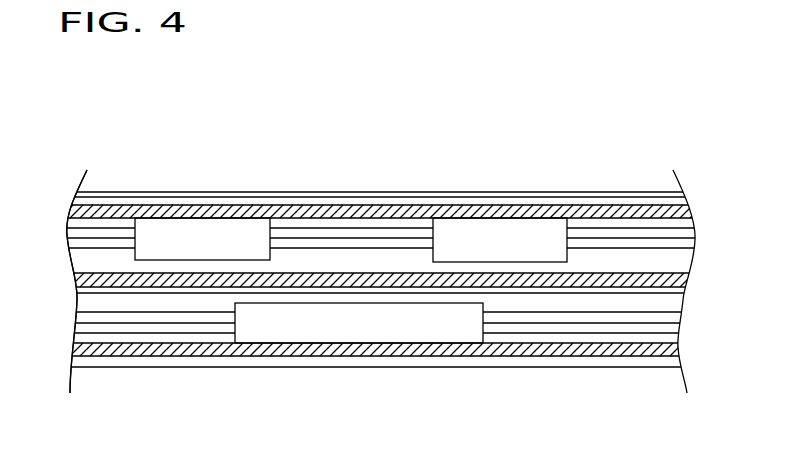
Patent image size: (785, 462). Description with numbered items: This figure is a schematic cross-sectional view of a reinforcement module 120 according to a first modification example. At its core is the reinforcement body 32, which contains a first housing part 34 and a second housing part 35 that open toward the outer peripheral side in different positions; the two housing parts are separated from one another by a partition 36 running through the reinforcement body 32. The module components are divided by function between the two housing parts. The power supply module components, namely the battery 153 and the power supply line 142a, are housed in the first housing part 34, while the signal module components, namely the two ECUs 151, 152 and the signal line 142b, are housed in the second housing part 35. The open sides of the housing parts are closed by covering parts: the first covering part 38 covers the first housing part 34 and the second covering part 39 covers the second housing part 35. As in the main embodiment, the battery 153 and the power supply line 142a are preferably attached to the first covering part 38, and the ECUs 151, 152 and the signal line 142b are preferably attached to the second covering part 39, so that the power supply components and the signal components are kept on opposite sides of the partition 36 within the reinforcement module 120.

The reinforcement module 120 is at (381, 172).
The reinforcement body 32 is at (82, 300).
The second covering part 39 is at (632, 192).
The signal line 142b is at (325, 238).
The ECU 151 is at (175, 225).
The ECU 152 is at (515, 238).
The second housing part 35 is at (655, 273).
The partition 36 is at (675, 279).
The first housing part 34 is at (658, 289).
The battery 153 is at (283, 330).
The power supply line 142a is at (558, 320).
The first covering part 38 is at (622, 370).